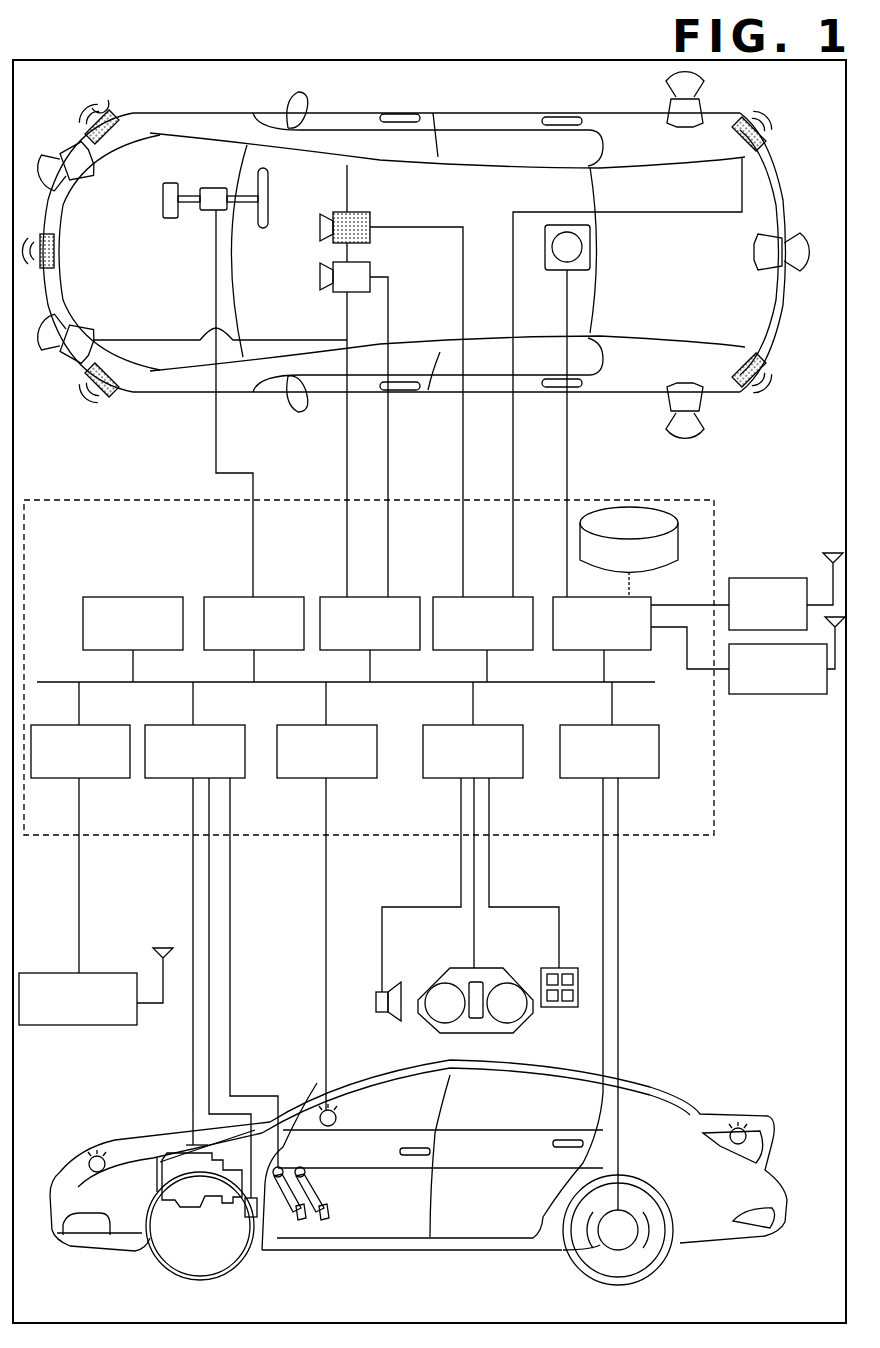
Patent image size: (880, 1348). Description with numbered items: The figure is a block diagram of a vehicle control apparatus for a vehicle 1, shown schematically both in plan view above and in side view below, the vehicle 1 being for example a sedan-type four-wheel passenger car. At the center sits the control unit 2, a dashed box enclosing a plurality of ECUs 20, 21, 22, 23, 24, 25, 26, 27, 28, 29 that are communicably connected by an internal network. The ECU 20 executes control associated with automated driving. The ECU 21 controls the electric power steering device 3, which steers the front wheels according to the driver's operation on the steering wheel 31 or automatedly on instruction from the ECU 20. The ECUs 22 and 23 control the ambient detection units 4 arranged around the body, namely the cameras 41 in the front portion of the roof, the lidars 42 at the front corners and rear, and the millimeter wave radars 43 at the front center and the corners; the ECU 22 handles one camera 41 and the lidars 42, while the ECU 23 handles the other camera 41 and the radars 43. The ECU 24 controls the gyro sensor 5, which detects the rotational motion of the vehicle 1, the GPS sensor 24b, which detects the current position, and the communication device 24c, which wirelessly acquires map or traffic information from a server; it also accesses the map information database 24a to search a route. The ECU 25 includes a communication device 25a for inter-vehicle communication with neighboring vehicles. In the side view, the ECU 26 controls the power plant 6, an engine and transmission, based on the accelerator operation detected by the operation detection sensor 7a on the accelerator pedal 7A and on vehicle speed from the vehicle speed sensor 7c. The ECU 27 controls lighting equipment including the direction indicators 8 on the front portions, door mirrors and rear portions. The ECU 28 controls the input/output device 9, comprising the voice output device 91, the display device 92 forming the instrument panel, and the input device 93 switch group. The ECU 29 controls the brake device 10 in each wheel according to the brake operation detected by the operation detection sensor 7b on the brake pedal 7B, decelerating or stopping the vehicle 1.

The vehicle 1 is at (786, 165).
The control unit 2 is at (700, 838).
The electric power steering device 3 is at (171, 220).
The steering wheel 31 is at (266, 230).
The external sensor group 4 is at (65, 118).
The camera 41 is at (372, 238).
The lidar 42 is at (80, 182).
The millimeter wave radar 43 is at (110, 135).
The gyro sensor 5 is at (590, 244).
The power plant 6 is at (167, 1150).
The operation detection sensor 7a is at (282, 1165).
The accelerator pedal 7A is at (310, 1210).
The operation detection sensor 7b is at (305, 1166).
The brake pedal 7B is at (330, 1205).
The vehicle speed sensor 7c is at (251, 1217).
The direction indicators 8 is at (89, 1160).
The input/output device 9 is at (410, 1037).
The voice output device 91 is at (375, 995).
The display device 92 is at (440, 975).
The input device 93 is at (557, 1007).
The brake device 10 is at (626, 1250).
The ECU 20 is at (162, 596).
The ECU 21 is at (286, 596).
The ECU 22 is at (371, 596).
The ECU 23 is at (493, 596).
The ECU 24 is at (558, 596).
The map information database 24a is at (627, 505).
The GPS sensor 24b is at (779, 577).
The communication device 24c is at (778, 696).
The ECU 25 is at (106, 780).
The communication device 25a is at (82, 1026).
The ECU 26 is at (173, 780).
The ECU 27 is at (356, 780).
The ECU 28 is at (511, 780).
The ECU 29 is at (646, 780).